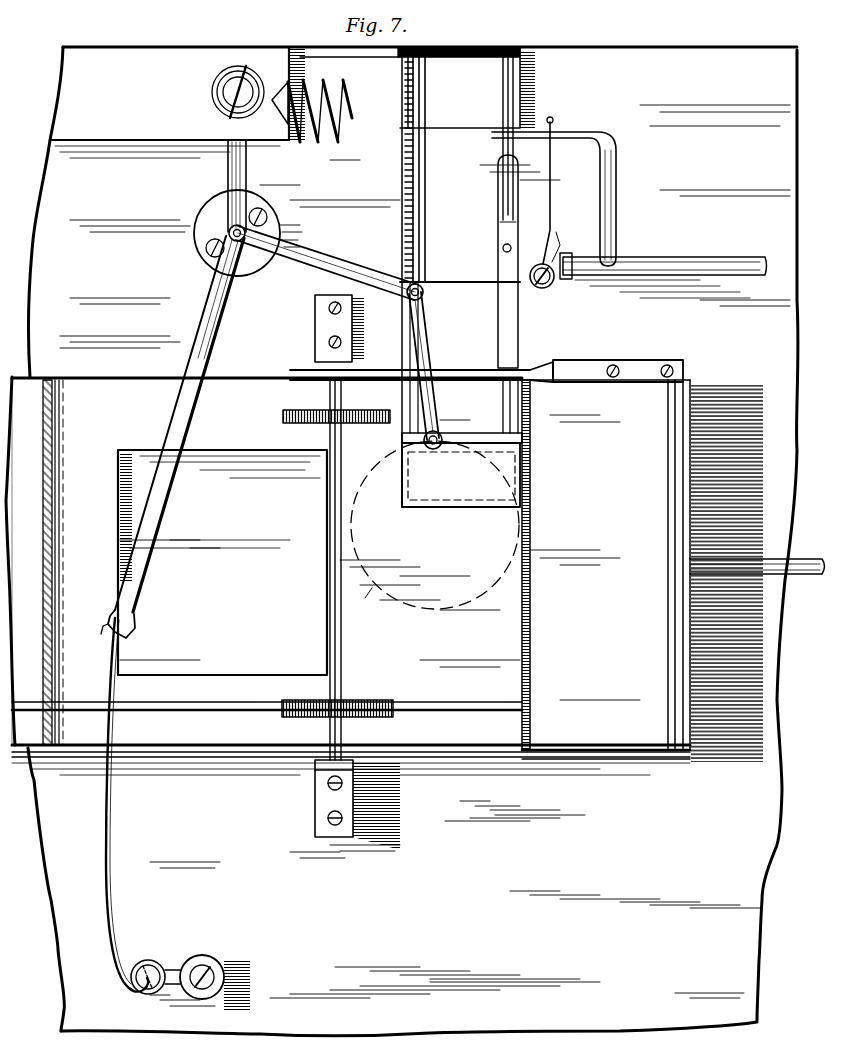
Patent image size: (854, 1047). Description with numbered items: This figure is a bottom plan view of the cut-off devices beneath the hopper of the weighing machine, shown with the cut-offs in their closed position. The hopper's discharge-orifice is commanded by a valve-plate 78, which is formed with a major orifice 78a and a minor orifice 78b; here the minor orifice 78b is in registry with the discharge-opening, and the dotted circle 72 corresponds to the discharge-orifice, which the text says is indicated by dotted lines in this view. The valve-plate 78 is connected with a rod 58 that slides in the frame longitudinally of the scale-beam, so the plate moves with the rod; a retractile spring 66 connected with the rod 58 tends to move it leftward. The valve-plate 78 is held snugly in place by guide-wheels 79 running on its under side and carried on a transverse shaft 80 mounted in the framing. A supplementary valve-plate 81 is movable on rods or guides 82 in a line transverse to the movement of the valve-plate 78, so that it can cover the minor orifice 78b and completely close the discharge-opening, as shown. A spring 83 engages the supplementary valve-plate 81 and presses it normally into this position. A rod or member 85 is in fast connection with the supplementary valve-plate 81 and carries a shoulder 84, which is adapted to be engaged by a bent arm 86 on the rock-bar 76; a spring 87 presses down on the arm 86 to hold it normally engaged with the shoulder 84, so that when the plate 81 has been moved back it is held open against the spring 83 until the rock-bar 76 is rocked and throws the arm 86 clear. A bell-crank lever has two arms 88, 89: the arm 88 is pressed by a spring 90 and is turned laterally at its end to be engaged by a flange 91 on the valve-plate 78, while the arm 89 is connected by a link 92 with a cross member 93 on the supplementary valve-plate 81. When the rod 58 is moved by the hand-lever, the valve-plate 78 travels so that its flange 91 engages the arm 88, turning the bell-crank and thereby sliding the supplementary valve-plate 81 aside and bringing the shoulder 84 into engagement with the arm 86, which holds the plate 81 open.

The rod 58 is at (810, 578).
The retractile spring 66 is at (353, 128).
The circular member 72 is at (380, 592).
The rock-bar 76 is at (655, 258).
The valve-plate 78 is at (249, 561).
The major orifice 78a is at (215, 676).
The minor orifice 78b is at (422, 507).
The guide-wheels 79 is at (287, 409).
The transverse shaft 80 is at (341, 471).
The supplementary valve-plate 81 is at (486, 492).
The rods or guides 82 is at (440, 429).
The spring 83 is at (426, 249).
The shoulder 84 is at (513, 196).
The rod or member 85 is at (502, 258).
The bent arm 86 is at (583, 130).
The spring 87 is at (551, 216).
The arm of bell-crank lever 88 is at (203, 355).
The arm of bell-crank lever 89 is at (328, 256).
The spring 90 is at (107, 816).
The flange 91 is at (55, 551).
The link 92 is at (428, 357).
The cross member 93 is at (521, 461).